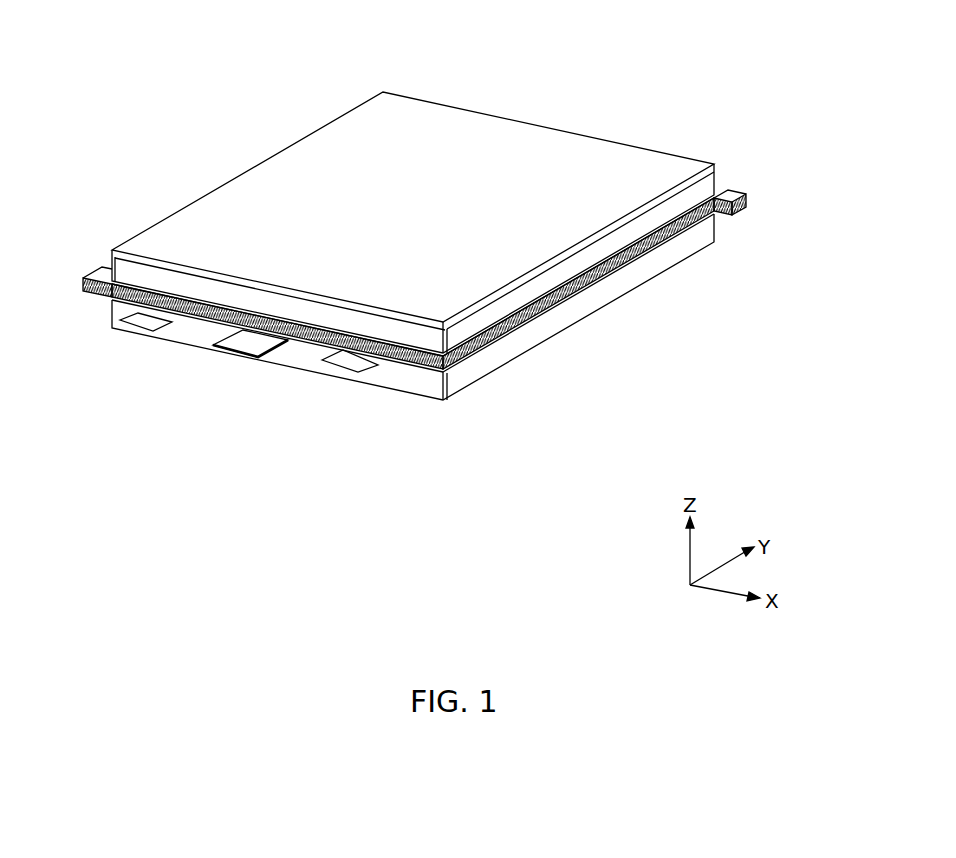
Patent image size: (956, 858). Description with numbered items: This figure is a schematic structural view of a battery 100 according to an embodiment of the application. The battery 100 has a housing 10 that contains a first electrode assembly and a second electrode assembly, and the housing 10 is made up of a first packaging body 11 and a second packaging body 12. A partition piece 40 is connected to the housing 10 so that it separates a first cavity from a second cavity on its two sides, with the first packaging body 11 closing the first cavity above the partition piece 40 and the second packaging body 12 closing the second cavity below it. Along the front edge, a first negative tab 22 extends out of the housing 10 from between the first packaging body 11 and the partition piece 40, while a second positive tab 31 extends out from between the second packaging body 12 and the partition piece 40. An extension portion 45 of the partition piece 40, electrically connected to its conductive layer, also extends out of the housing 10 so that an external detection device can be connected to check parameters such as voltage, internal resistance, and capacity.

The battery 100 is at (442, 51).
The housing 10 is at (780, 181).
The first packaging body 11 is at (450, 222).
The second packaging body 12 is at (450, 307).
The partition piece 40 is at (414, 290).
The second positive tab 31 is at (147, 327).
The extension portion 45 is at (247, 348).
The first negative tab 22 is at (353, 363).